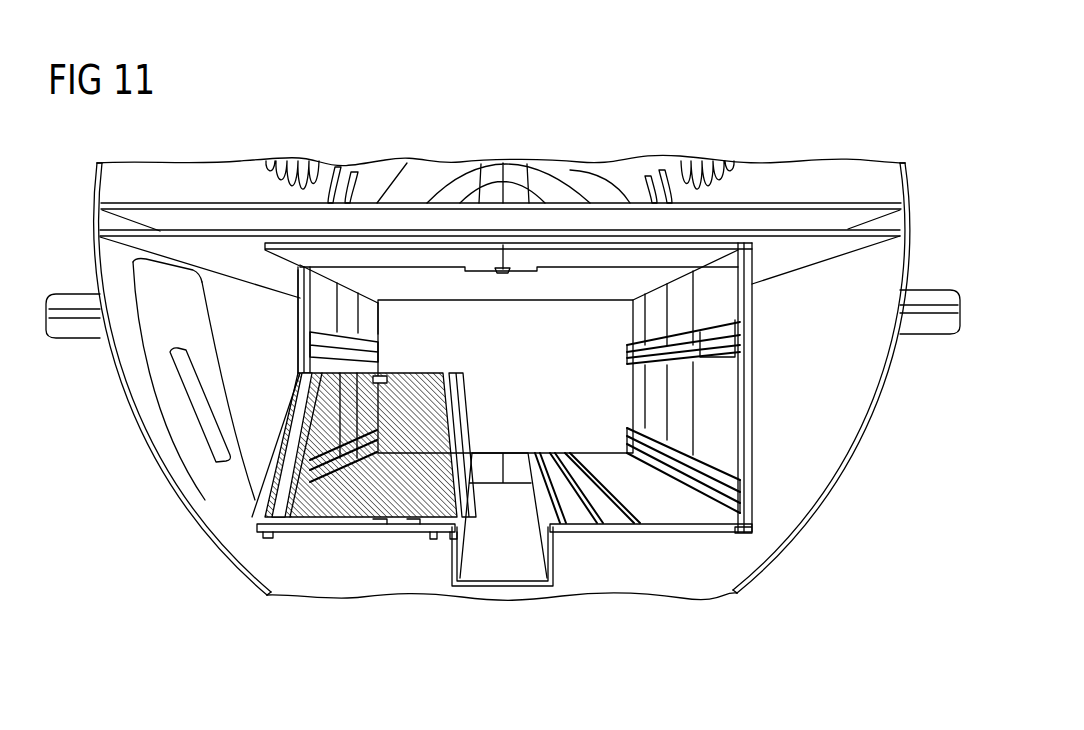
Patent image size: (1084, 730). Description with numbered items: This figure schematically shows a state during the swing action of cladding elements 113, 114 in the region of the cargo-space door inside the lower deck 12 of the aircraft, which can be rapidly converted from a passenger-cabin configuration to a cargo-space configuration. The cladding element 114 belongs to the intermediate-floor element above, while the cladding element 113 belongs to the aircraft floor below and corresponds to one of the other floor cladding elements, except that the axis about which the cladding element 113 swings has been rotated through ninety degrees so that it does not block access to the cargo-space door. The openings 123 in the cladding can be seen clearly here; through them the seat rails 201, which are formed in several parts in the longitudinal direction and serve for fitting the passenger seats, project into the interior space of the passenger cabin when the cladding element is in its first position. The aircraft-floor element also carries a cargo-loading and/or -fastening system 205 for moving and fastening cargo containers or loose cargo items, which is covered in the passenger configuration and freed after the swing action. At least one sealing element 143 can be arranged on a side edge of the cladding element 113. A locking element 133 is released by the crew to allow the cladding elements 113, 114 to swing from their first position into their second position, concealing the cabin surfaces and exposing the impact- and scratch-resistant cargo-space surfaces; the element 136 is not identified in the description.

The lower deck 12 is at (134, 438).
The cladding element 113 is at (298, 440).
The cladding element 114 is at (410, 262).
The openings 123 is at (393, 487).
The locking element 133 is at (382, 376).
The holder 136 is at (503, 273).
The sealing element 143 is at (468, 405).
The seat rail 201 is at (268, 534).
The cargo-loading and/or -fastening system 205 is at (627, 533).